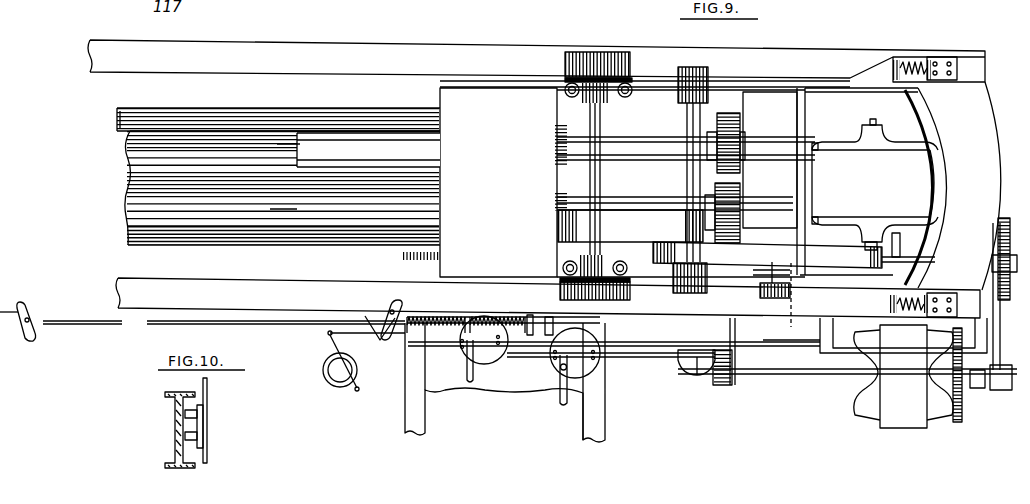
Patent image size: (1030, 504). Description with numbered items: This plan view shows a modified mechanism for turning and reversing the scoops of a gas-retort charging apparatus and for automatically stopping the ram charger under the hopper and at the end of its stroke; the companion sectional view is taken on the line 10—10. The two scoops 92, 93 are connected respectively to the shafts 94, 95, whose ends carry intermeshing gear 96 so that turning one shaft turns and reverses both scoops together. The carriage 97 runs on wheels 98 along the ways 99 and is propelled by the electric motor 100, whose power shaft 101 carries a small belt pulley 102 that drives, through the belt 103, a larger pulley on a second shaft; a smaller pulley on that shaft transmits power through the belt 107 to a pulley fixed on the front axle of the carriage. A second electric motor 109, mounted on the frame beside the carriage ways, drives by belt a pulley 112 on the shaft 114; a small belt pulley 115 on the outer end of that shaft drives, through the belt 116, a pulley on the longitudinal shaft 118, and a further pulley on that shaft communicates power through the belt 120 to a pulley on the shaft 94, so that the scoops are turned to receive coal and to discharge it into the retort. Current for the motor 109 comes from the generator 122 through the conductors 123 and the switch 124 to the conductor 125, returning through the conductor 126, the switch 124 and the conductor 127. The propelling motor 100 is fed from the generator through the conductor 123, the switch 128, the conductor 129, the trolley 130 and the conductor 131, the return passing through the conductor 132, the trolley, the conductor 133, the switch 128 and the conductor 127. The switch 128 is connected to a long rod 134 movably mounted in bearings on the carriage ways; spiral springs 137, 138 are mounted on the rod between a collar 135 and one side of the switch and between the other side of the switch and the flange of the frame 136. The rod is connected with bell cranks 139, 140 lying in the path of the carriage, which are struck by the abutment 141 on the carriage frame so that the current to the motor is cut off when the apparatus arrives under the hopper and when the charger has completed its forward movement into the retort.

In FIG. 9, the line 10— 10 is at (788, 296).
In FIG. 9, the scoop 92 is at (130, 207).
In FIG. 9, the scoop 93 is at (116, 116).
In FIG. 9, the shaft 94 is at (633, 194).
In FIG. 9, the shaft 95 is at (637, 137).
In FIG. 9, the intermeshing gear 96 is at (740, 168).
In FIG. 9, the carriage 97 is at (445, 85).
In FIG. 10, the carriage 97 is at (208, 395).
In FIG. 9, the wheels 98 is at (591, 58).
In FIG. 9, the ways 99 is at (536, 179).
In FIG. 10, the ways 99 is at (178, 432).
In FIG. 9, the electric motor 100 is at (869, 181).
In FIG. 9, the power shaft 101 is at (872, 125).
In FIG. 9, the small belt pulley 102 is at (882, 250).
In FIG. 9, the belt 103 is at (767, 255).
In FIG. 9, the belt 107 is at (630, 226).
In FIG. 9, the electric motor 109 is at (896, 414).
In FIG. 9, the pulley 112 is at (961, 421).
In FIG. 9, the shaft 114 is at (786, 377).
In FIG. 9, the small belt pulley 115 is at (992, 389).
In FIG. 9, the belt 116 is at (1002, 331).
In FIG. 9, the shaft 118 is at (937, 265).
In FIG. 9, the belt 120 is at (710, 222).
In FIG. 9, the generator 122 is at (338, 376).
In FIG. 9, the conductors 123 is at (358, 391).
In FIG. 9, the switch 124 is at (580, 380).
In FIG. 9, the conductor 125 is at (670, 385).
In FIG. 9, the conductor 126 is at (618, 358).
In FIG. 9, the conductor 127 is at (324, 342).
In FIG. 9, the switch 128 is at (485, 352).
In FIG. 9, the conductor 129 is at (531, 357).
In FIG. 9, the trolley 130 is at (770, 292).
In FIG. 10, the trolley 130 is at (199, 435).
In FIG. 9, the conductor 131 is at (898, 237).
In FIG. 9, the conductor 132 is at (878, 256).
In FIG. 9, the conductor 133 is at (656, 338).
In FIG. 9, the long rod 134 is at (278, 323).
In FIG. 9, the collar 135 is at (530, 315).
In FIG. 9, the frame 136 is at (405, 363).
In FIG. 9, the spiral spring 137 is at (491, 320).
In FIG. 9, the spiral spring 138 is at (425, 320).
In FIG. 9, the bell crank 139 is at (393, 309).
In FIG. 9, the bell crank 140 is at (40, 299).
In FIG. 9, the abutment 141 is at (689, 192).